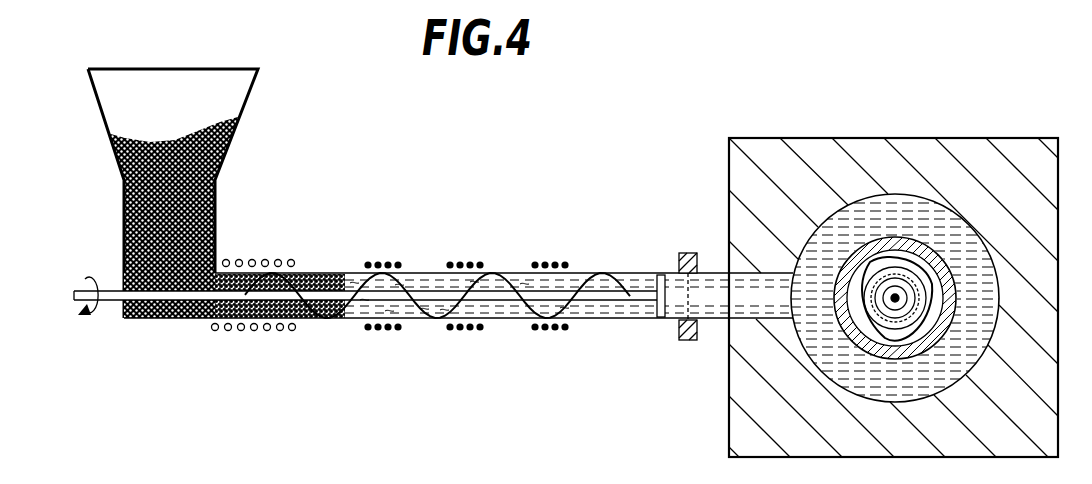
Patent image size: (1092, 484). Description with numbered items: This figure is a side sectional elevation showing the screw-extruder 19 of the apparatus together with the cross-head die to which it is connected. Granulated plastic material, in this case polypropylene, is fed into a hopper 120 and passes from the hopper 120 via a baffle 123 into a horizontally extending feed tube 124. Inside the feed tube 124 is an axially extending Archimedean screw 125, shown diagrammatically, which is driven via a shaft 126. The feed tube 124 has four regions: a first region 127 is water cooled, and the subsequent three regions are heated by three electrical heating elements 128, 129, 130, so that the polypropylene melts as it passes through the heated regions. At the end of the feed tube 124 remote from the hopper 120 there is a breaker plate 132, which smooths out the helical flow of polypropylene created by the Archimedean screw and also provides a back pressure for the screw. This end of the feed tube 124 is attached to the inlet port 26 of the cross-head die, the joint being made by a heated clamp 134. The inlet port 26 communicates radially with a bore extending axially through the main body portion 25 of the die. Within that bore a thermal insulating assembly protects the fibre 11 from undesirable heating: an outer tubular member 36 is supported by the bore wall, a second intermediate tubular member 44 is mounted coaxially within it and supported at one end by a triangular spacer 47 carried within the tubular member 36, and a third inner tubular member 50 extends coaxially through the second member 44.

The hopper 120 is at (222, 149).
The baffle 123 is at (216, 241).
The feed tube 124 is at (323, 272).
The Archimedean screw 125 is at (428, 322).
The shaft 126 is at (165, 298).
The first region 127 is at (244, 334).
The electrical heating element 128 is at (380, 262).
The electrical heating element 129 is at (462, 262).
The electrical heating element 130 is at (553, 262).
The screw-extruder 19 is at (331, 328).
The breaker plate 132 is at (658, 300).
The heated clamp 134 is at (689, 251).
The inlet port 26 is at (710, 324).
The main body portion 25 is at (846, 160).
The fibre 11 is at (897, 292).
The third inner tubular member 50 is at (885, 290).
The triangular spacer 47 is at (955, 268).
The second intermediate tubular member 44 is at (885, 302).
The outer tubular member 36 is at (915, 335).